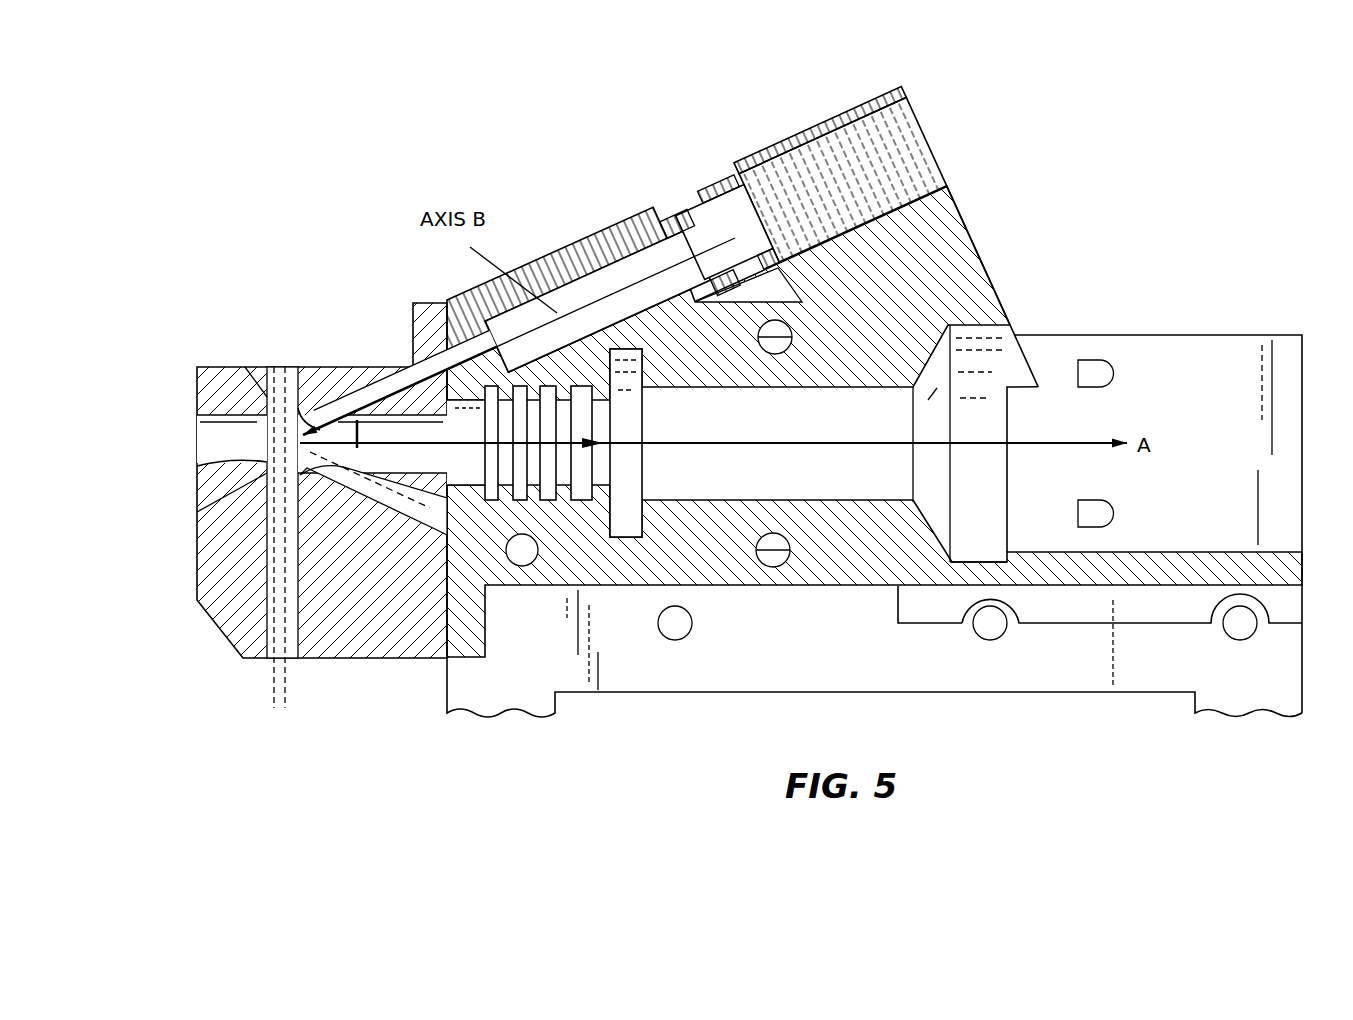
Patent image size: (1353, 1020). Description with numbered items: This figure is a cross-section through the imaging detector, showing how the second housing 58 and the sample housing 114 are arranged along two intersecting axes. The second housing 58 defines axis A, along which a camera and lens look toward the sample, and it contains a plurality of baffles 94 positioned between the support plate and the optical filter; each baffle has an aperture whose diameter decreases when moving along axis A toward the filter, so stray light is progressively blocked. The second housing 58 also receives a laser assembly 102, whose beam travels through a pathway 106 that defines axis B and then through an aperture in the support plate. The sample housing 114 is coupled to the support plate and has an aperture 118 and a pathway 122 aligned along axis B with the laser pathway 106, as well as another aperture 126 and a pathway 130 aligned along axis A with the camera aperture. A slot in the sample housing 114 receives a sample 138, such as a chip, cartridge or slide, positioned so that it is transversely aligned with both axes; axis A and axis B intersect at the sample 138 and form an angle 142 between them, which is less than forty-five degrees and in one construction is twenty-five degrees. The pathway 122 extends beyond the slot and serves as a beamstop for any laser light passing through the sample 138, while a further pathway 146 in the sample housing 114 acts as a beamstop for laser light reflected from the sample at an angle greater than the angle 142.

The second housing 58 is at (1034, 112).
The laser assembly 102 is at (730, 192).
The pathway 106 is at (597, 270).
The aperture 118 is at (447, 352).
The pathway 122 is at (383, 377).
The angle 142 is at (357, 422).
The sample housing 114 is at (208, 627).
The sample 138 is at (277, 707).
The pathway 130 is at (308, 463).
The pathway 146 is at (380, 507).
The aperture 126 is at (447, 473).
The baffles 94 is at (567, 503).